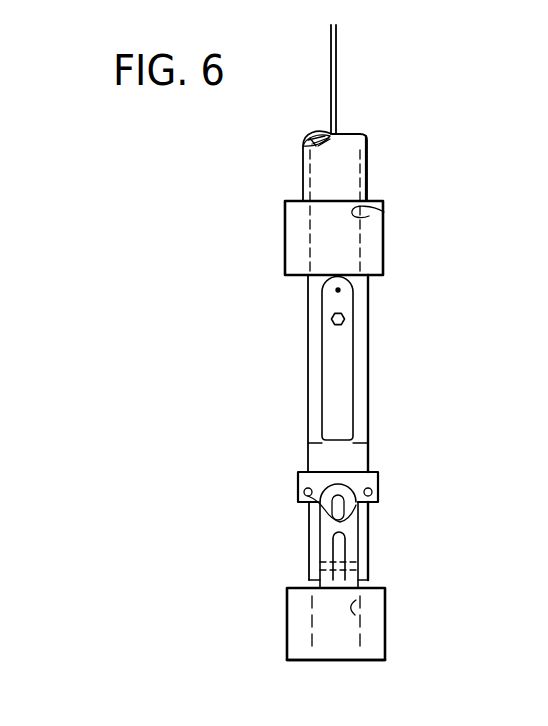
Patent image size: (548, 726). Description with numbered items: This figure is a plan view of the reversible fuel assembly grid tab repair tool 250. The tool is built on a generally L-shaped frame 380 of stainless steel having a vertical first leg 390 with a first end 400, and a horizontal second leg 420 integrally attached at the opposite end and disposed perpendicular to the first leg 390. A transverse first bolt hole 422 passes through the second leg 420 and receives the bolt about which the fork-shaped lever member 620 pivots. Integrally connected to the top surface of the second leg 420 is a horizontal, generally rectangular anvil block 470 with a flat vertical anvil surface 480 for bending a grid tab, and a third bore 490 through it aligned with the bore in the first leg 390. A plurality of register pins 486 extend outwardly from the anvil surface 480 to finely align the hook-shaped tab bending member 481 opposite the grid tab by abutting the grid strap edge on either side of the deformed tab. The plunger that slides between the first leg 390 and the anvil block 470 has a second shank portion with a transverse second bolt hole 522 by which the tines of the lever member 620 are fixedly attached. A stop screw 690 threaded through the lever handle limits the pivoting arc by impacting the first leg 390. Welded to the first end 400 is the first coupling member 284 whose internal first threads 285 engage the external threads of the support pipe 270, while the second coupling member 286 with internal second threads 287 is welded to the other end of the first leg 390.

The grid tab repair tool 250 is at (258, 295).
The support pipe 270 is at (327, 160).
The first coupling member 284 is at (325, 219).
The first threads 285 is at (384, 212).
The L-shaped frame 380 is at (262, 367).
The first leg 390 is at (358, 322).
The first end 400 is at (355, 286).
The lever member 620 is at (345, 361).
The stop screw 690 is at (331, 320).
The anvil block 470 is at (379, 473).
The anvil surface 480 is at (369, 480).
The register pins 486 is at (340, 477).
The second bolt hole 522 is at (304, 491).
The tab bending member 481 is at (332, 505).
The third bore 490 is at (352, 516).
The second leg 420 is at (360, 562).
The first bolt hole 422 is at (314, 564).
The second threads 287 is at (385, 620).
The second coupling member 286 is at (373, 650).